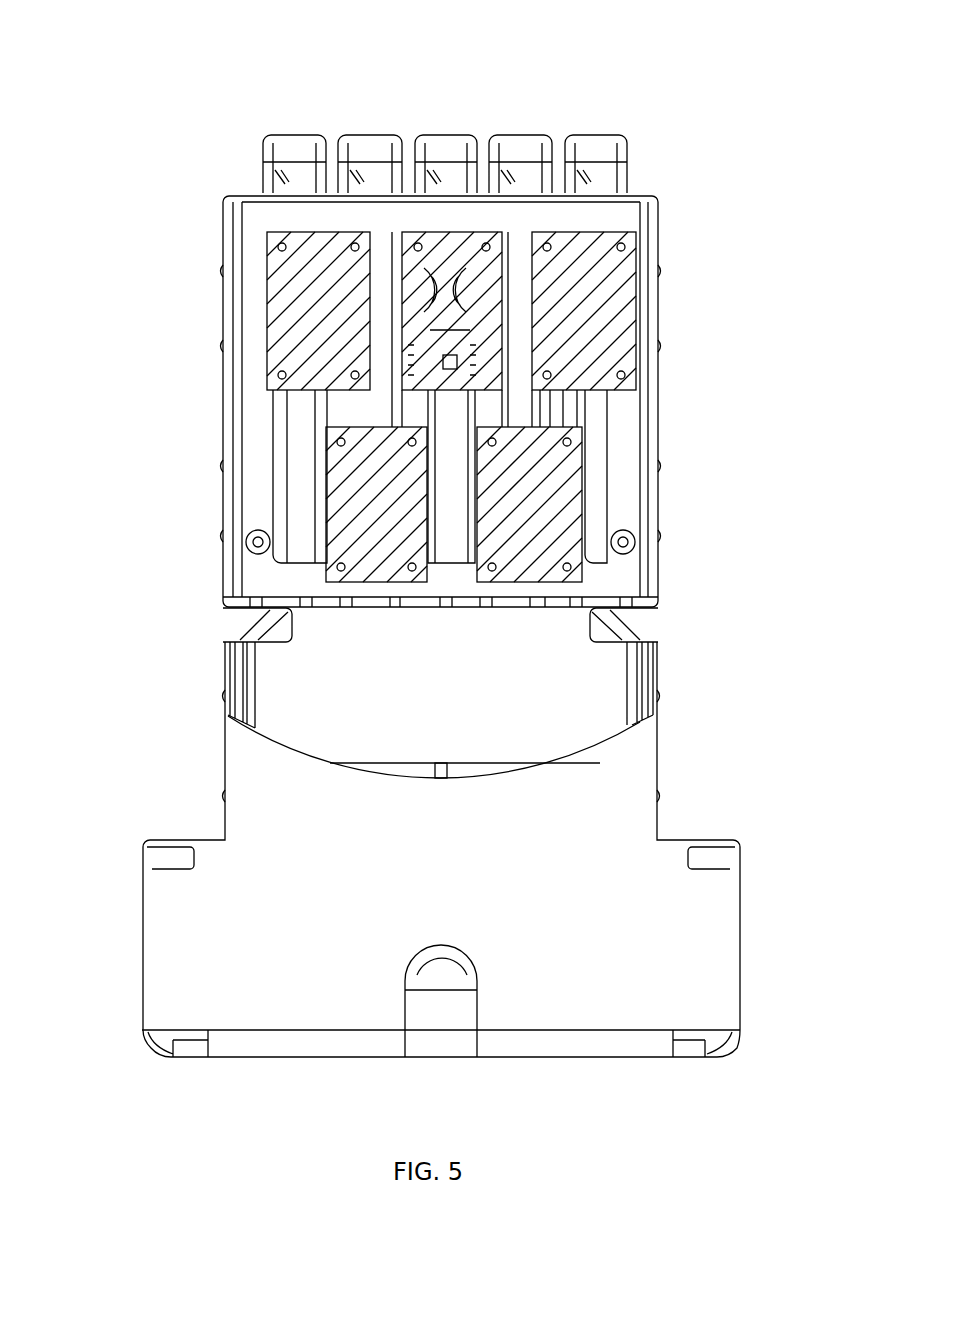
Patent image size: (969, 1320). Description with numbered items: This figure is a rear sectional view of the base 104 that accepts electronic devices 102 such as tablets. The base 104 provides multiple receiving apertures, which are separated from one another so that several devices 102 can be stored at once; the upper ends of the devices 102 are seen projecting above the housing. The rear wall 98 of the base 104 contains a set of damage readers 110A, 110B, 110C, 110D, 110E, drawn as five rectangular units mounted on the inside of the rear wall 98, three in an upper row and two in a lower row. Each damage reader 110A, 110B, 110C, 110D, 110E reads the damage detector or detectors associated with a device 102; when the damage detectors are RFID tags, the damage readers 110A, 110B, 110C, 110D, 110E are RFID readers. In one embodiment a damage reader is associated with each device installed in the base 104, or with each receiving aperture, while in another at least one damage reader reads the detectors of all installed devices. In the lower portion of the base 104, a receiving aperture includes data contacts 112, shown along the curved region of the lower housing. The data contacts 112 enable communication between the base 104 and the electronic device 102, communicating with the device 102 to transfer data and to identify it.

The rear wall 98 is at (624, 213).
The device 102 is at (597, 145).
The base 104 is at (605, 800).
The damage reader 110A is at (298, 293).
The damage reader 110B is at (360, 497).
The damage reader 110C is at (426, 215).
The damage reader 110D is at (550, 488).
The damage reader 110E is at (607, 297).
The data contacts 112 is at (438, 763).